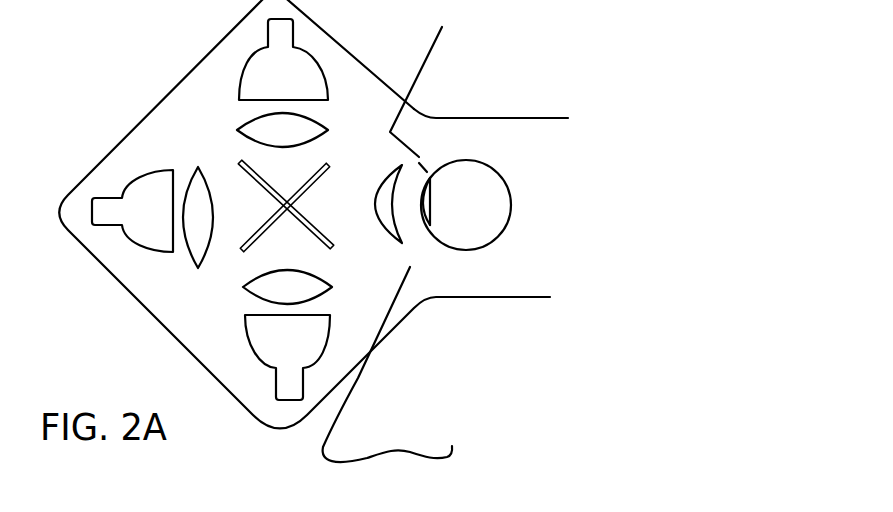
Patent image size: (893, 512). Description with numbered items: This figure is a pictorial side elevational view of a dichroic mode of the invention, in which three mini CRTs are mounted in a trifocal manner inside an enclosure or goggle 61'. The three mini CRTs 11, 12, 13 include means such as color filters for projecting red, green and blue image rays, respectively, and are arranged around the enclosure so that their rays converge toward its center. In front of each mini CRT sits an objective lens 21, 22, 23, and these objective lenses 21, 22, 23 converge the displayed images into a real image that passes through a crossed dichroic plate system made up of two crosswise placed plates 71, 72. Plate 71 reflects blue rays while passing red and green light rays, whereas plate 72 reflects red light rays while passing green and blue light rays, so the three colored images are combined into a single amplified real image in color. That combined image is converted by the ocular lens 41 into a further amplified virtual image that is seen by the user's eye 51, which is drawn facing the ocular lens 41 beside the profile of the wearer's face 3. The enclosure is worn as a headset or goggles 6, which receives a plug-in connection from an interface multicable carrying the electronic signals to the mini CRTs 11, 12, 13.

The enclosure or goggle 61' is at (304, 214).
The patient's face profile 3 is at (422, 62).
The headset or goggles 6 is at (457, 118).
The mini CRT 11 is at (308, 50).
The mini CRT 12 is at (130, 240).
The mini CRT 13 is at (323, 350).
The objective lens 21 is at (328, 128).
The objective lens 22 is at (197, 262).
The objective lens 23 is at (331, 285).
The ocular lens 41 is at (380, 186).
The user's eye 51 is at (503, 182).
The dichroic plate 71 is at (243, 167).
The dichroic plate 72 is at (244, 243).